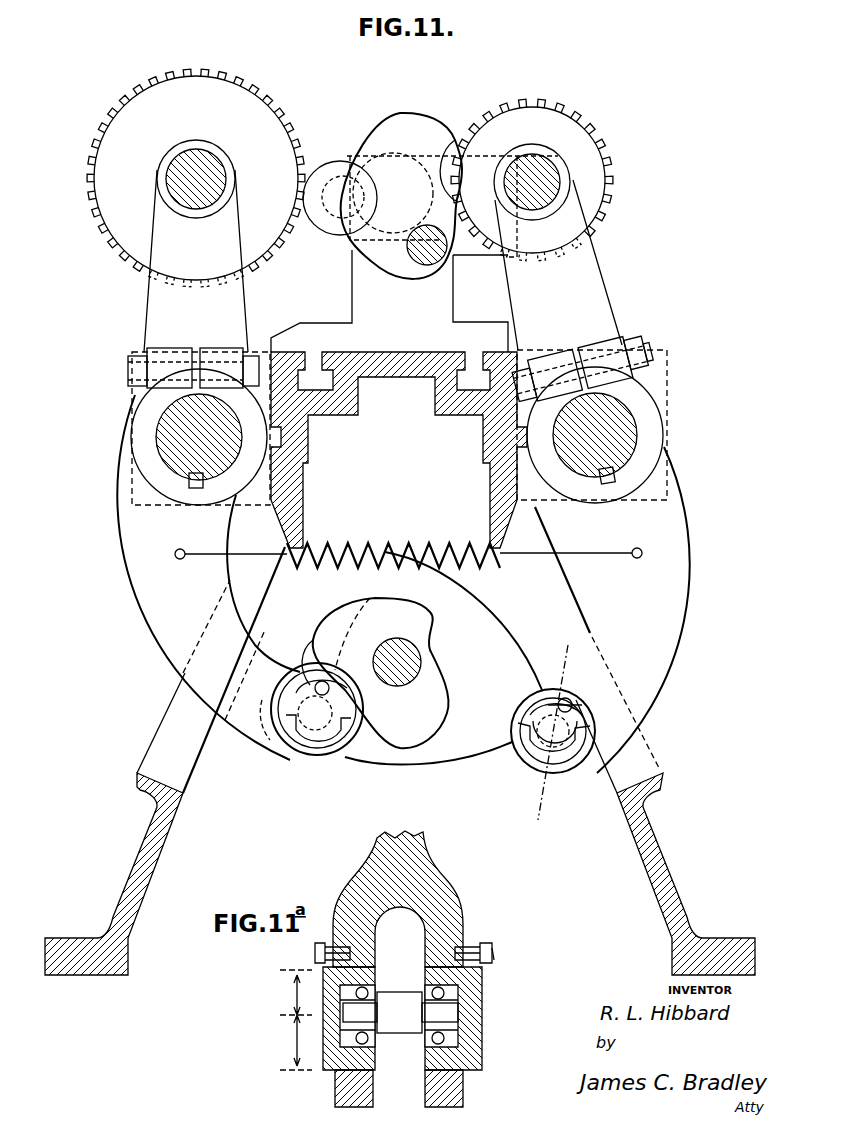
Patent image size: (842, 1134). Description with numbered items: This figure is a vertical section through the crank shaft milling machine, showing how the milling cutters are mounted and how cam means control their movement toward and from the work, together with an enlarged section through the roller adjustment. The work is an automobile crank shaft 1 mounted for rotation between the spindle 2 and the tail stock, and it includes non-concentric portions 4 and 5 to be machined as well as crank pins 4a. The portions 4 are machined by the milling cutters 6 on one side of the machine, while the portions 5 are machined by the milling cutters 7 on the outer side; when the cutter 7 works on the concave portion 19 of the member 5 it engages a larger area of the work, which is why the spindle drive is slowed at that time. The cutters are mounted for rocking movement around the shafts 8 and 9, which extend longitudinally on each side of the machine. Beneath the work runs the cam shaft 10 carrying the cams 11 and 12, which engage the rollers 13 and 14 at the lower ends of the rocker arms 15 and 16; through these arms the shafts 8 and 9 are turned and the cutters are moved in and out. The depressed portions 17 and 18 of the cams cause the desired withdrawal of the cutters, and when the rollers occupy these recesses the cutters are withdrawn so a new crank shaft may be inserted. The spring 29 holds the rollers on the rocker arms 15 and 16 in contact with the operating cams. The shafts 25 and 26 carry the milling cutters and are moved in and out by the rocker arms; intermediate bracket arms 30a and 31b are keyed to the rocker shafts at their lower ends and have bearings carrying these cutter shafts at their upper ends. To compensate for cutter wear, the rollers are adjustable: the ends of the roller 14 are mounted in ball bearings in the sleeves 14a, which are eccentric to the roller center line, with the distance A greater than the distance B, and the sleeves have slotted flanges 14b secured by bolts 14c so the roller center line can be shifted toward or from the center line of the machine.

In FIG. 11, the crank shaft 1 is at (383, 158).
In FIG. 11, the spindle 2 is at (399, 450).
In FIG. 11, the non-concentric portions 4 is at (330, 168).
In FIG. 11, the crank pins 4a is at (332, 228).
In FIG. 11, the non-concentric portions 5 is at (412, 128).
In FIG. 11, the milling cutters 6 is at (110, 187).
In FIG. 11, the milling cutters 7 is at (573, 143).
In FIG. 11, the shaft 8 is at (165, 426).
In FIG. 11, the shaft 9 is at (610, 426).
In FIG. 11, the cam shaft 10 is at (397, 672).
In FIG. 11, the cam 11 is at (335, 618).
In FIG. 11, the cam 12 is at (468, 612).
In FIG. 11, the roller 13 is at (289, 764).
In FIG. 11, the roller 14 is at (560, 768).
In FIG. 11A, the roller 14 is at (398, 997).
In FIG. 11, the sleeves 14a is at (536, 758).
In FIG. 11A, the sleeves 14a is at (470, 1038).
In FIG. 11, the slotted flanges 14b is at (583, 716).
In FIG. 11A, the slotted flanges 14b is at (470, 943).
In FIG. 11, the bolts 14c is at (568, 702).
In FIG. 11A, the bolts 14c is at (494, 955).
In FIG. 11, the rocker arm 15 is at (166, 632).
In FIG. 11, the rocker arm 16 is at (668, 628).
In FIG. 11A, the rocker arm 16 is at (413, 858).
In FIG. 11, the depressed portion 17 is at (432, 649).
In FIG. 11, the depressed portion 18 is at (382, 588).
In FIG. 11, the concave portion 19 is at (448, 138).
In FIG. 11, the shaft 25 is at (174, 178).
In FIG. 11, the shaft 26 is at (543, 187).
In FIG. 11, the spring 29 is at (335, 547).
In FIG. 11, the bracket arm 30a is at (146, 302).
In FIG. 11, the bracket arm 31b is at (593, 303).